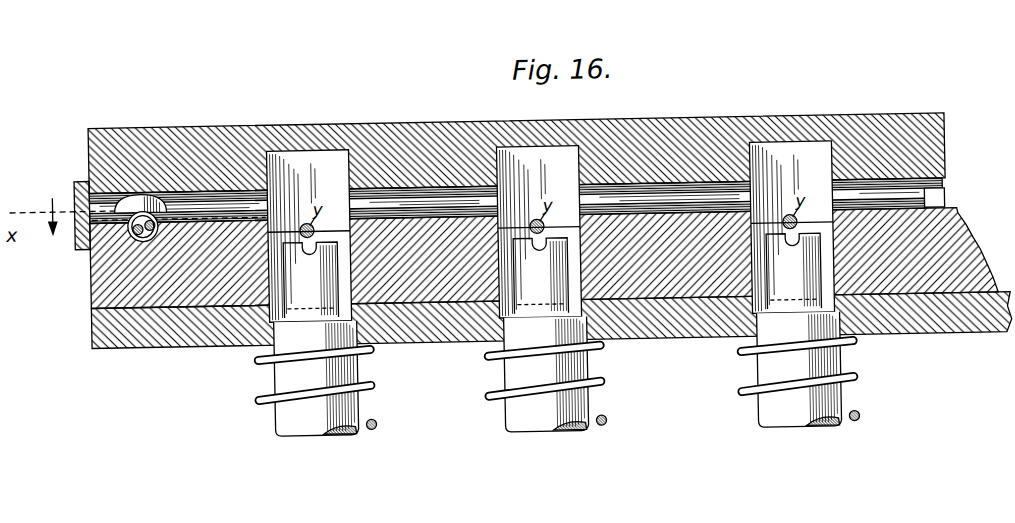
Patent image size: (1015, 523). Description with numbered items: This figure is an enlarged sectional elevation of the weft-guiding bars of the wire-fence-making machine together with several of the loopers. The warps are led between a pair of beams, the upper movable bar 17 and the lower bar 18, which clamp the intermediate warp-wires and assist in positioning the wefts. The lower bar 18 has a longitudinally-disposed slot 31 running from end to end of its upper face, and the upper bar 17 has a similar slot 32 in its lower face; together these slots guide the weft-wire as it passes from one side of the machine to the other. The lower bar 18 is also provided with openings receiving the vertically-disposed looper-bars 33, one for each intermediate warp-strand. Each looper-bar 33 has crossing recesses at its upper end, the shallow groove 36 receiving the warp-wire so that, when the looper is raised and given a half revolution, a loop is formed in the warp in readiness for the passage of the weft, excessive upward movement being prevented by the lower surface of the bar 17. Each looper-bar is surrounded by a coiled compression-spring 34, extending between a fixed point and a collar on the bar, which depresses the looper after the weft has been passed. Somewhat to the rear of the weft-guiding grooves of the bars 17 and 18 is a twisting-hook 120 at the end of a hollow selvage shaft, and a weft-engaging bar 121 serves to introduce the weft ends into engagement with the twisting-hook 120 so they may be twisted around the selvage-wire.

The upper movable bar 17 is at (90, 140).
The lower bar 18 is at (116, 271).
The longitudinally-disposed slot 31 is at (506, 203).
The slot 32 is at (613, 190).
The looper-bar 33 is at (292, 409).
The coiled compression-spring 34 is at (400, 326).
The shallow groove 36 is at (788, 252).
The twisting-hook 120 is at (138, 208).
The weft-engaging bar 121 is at (74, 189).